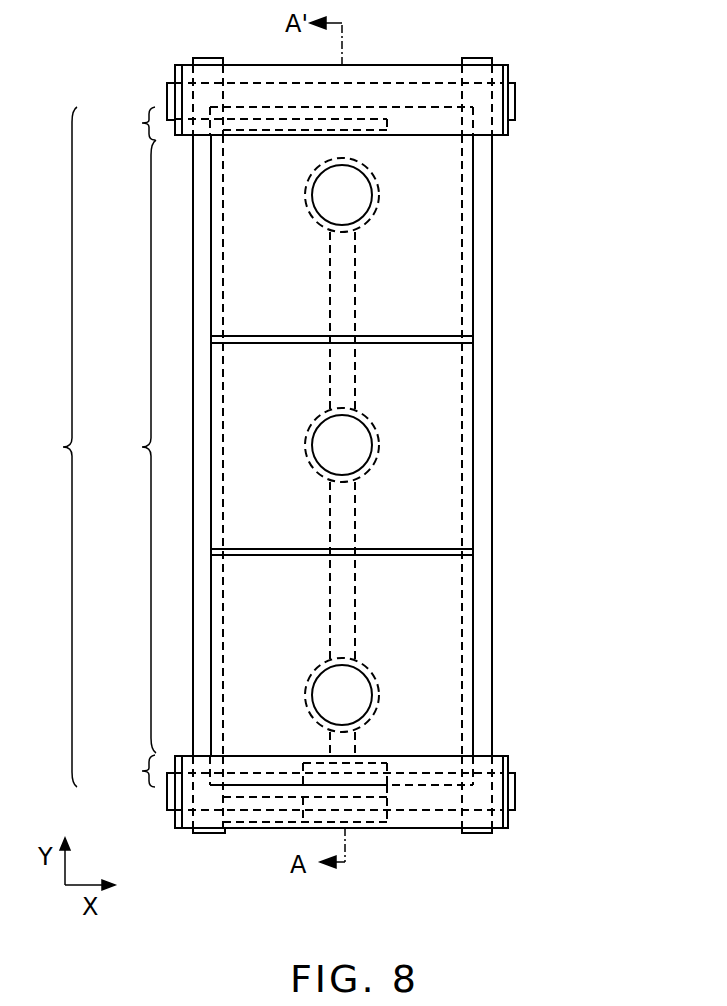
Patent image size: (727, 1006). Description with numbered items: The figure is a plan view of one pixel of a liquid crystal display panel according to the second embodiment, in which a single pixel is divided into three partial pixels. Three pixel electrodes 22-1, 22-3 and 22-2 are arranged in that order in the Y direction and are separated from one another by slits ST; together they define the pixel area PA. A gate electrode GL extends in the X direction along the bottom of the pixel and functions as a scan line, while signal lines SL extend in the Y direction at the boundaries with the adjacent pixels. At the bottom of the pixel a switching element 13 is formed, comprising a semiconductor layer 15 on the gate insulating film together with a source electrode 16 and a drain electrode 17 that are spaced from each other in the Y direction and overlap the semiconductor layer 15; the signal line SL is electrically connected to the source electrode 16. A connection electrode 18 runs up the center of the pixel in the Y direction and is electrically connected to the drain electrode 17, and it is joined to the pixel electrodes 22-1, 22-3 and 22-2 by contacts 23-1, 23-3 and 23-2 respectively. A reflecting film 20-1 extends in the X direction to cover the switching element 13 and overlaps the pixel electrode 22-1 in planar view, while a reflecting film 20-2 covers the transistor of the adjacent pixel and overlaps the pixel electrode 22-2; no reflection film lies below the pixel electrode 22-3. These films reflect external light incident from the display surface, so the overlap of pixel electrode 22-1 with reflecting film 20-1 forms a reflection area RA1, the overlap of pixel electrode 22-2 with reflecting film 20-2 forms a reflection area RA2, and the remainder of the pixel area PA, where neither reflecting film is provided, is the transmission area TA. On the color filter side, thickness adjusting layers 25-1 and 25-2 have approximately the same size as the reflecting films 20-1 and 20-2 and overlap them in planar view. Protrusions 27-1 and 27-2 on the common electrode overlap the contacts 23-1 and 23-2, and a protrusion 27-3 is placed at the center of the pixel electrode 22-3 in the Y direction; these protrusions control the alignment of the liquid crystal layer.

The switching element 13 is at (393, 795).
The semiconductor layer 15 is at (377, 828).
The source electrode 16 is at (300, 828).
The drain electrode 17 is at (387, 763).
The connection electrode 18 is at (356, 513).
The reflecting film 20-1 is at (510, 815).
The reflecting film 20-2 is at (508, 78).
The pixel electrode 22-1 is at (473, 610).
The pixel electrode 22-2 is at (473, 287).
The pixel electrode 22-3 is at (473, 386).
The contact 23-1 is at (379, 713).
The contact 23-2 is at (378, 180).
The contact 23-3 is at (379, 462).
The thickness adjusting layer 25-1 is at (510, 830).
The thickness adjusting layer 25-2 is at (510, 66).
The protrusion 27-1 is at (372, 691).
The protrusion 27-2 is at (372, 197).
The protrusion 27-3 is at (372, 441).
The gate electrode GL is at (515, 100).
The signal line SL is at (213, 833).
The slit ST is at (473, 340).
The pixel area PA is at (47, 447).
The transmission area TA is at (126, 446).
The reflection area RA1 is at (121, 771).
The reflection area RA2 is at (119, 123).